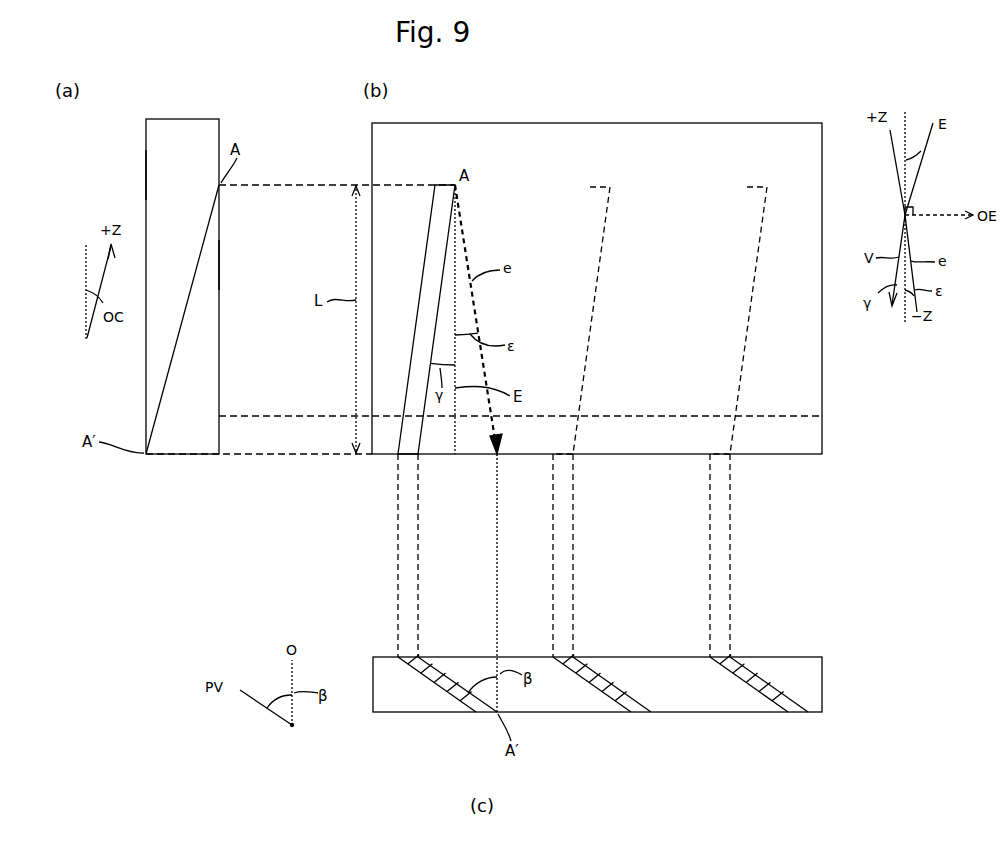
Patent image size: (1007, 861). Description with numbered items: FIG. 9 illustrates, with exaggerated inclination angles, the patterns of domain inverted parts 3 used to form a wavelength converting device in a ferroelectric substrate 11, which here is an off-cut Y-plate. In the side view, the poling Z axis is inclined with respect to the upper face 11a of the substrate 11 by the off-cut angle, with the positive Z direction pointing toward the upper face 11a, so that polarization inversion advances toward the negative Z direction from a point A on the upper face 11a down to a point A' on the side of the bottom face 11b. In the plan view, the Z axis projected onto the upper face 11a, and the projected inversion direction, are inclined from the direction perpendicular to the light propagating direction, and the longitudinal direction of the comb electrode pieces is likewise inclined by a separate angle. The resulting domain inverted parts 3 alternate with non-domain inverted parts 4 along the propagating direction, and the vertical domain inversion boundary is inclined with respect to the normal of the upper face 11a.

The ferroelectric substrate 11 is at (173, 140).
The upper face 11a is at (219, 265).
The bottom face 11b is at (146, 172).
The domain inverted part 3 is at (440, 183).
The non-domain inverted part 4 is at (576, 700).